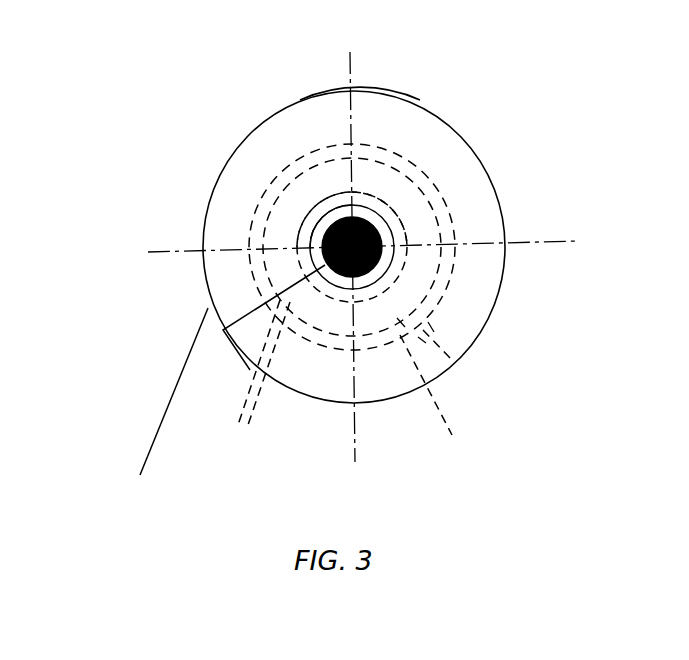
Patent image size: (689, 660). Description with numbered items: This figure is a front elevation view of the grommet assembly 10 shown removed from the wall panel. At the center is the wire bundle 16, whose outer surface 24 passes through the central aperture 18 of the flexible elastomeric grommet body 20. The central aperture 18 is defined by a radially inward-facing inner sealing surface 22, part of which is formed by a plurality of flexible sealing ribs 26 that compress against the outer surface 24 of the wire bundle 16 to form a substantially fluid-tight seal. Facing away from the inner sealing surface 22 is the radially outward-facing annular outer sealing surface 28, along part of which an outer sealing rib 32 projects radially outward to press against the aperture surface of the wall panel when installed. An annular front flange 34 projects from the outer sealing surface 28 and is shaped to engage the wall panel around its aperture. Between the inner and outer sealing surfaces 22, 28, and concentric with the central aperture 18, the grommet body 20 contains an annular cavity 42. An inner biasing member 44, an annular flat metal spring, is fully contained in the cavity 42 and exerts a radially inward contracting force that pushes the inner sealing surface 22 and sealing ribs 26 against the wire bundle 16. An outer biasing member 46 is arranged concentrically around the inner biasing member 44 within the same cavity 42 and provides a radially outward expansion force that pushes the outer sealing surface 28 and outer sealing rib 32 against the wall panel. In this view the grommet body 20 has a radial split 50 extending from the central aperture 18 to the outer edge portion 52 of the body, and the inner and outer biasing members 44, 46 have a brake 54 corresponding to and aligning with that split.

The grommet assembly 10 is at (138, 84).
The wire bundle 16 is at (382, 233).
The central aperture 18 is at (377, 223).
The grommet body 20 is at (380, 177).
The inner sealing surface 22 is at (333, 220).
The outer surface of the wire bundle 24 is at (323, 225).
The sealing ribs 26 is at (342, 213).
The outer sealing surface 28 is at (266, 223).
The outer sealing rib 32 is at (245, 254).
The front flange 34 is at (383, 107).
The annular cavity 42 is at (460, 365).
The inner biasing member 44 is at (427, 297).
The outer biasing member 46 is at (435, 387).
The radial split 50 is at (242, 320).
The outer edge portion 52 is at (140, 475).
The brake 54 is at (236, 433).